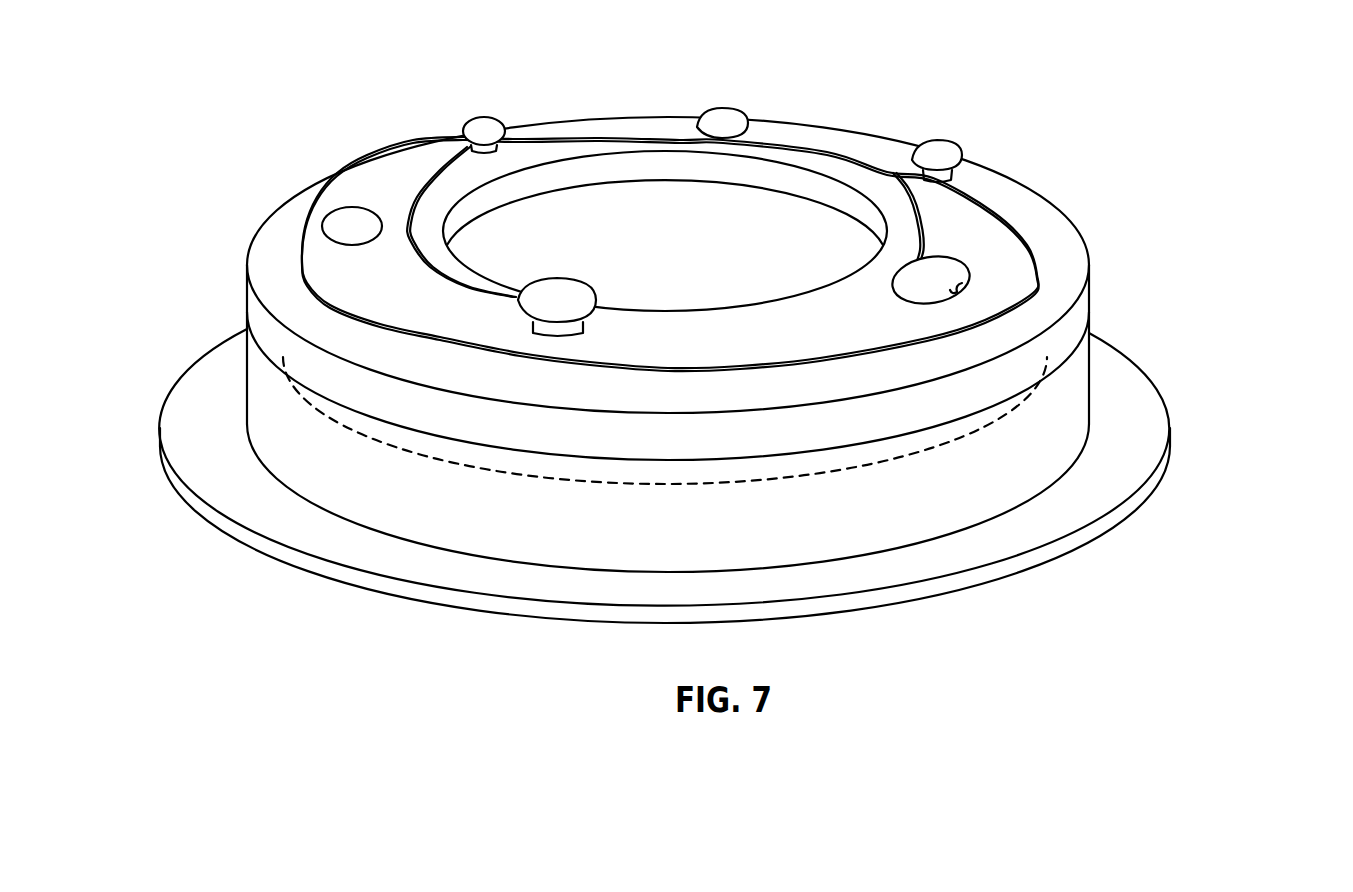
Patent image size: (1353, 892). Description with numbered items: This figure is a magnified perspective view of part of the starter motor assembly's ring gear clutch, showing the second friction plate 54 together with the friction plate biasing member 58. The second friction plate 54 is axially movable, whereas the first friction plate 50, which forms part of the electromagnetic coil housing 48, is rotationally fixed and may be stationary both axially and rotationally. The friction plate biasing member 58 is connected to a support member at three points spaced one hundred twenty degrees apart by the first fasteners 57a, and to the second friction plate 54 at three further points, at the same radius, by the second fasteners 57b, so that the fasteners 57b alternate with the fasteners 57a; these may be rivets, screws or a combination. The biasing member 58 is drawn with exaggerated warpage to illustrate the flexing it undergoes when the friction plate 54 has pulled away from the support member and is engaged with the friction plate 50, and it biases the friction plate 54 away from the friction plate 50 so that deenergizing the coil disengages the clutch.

The electromagnetic coil housing 48 is at (853, 522).
The first friction plate 50 is at (550, 465).
The second friction plate 54 is at (410, 405).
The first fasteners 57a is at (467, 122).
The second fasteners 57b is at (733, 110).
The friction plate biasing member 58 is at (808, 350).